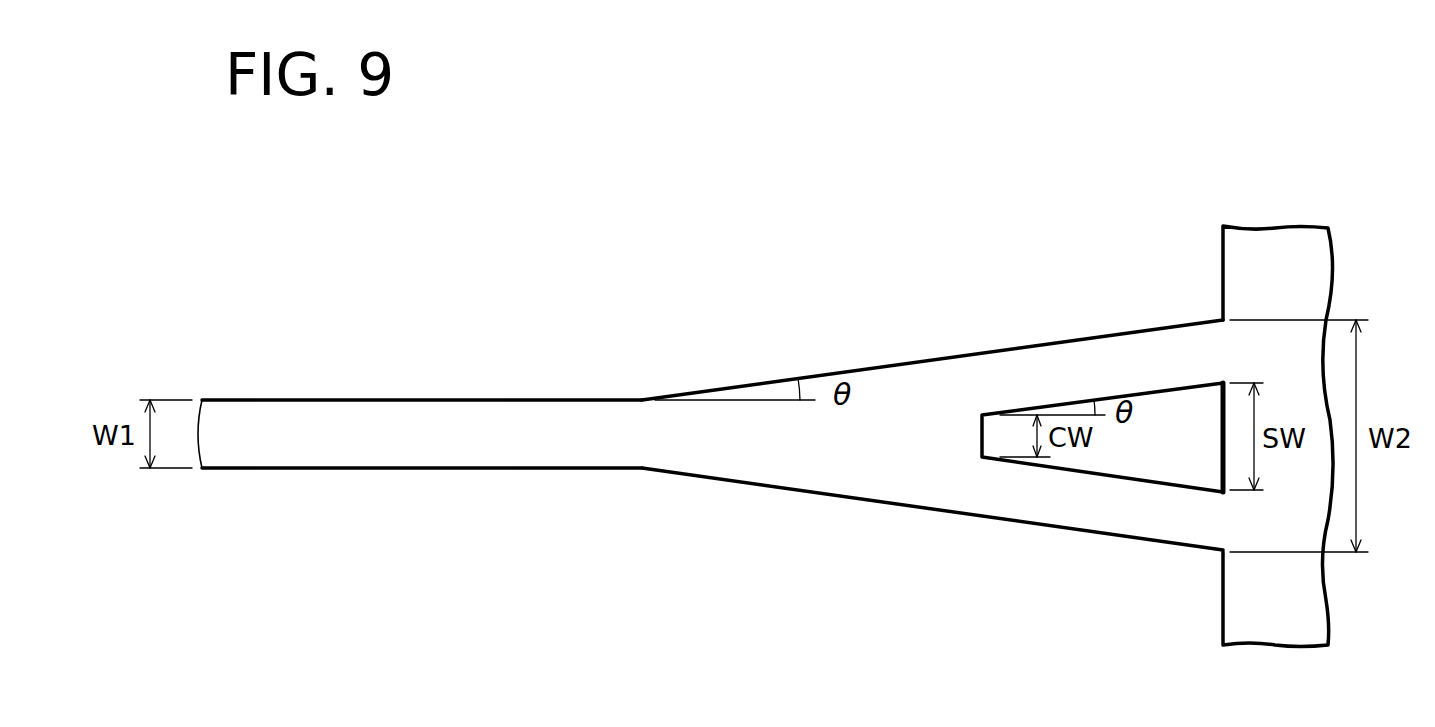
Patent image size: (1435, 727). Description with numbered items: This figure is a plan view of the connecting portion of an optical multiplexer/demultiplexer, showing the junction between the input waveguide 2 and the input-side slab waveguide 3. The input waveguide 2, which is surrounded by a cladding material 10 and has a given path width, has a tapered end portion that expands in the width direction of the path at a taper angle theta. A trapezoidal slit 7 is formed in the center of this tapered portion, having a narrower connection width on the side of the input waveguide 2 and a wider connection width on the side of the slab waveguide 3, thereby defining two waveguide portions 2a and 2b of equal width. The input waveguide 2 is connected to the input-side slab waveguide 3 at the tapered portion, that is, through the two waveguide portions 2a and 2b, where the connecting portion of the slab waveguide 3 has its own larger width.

The input waveguide 2 is at (363, 413).
The waveguide portion 2a is at (1090, 370).
The waveguide portion 2b is at (1097, 502).
The input-side slab waveguide 3 is at (1267, 240).
The slit 7 is at (1170, 412).
The cladding material 10 is at (602, 533).